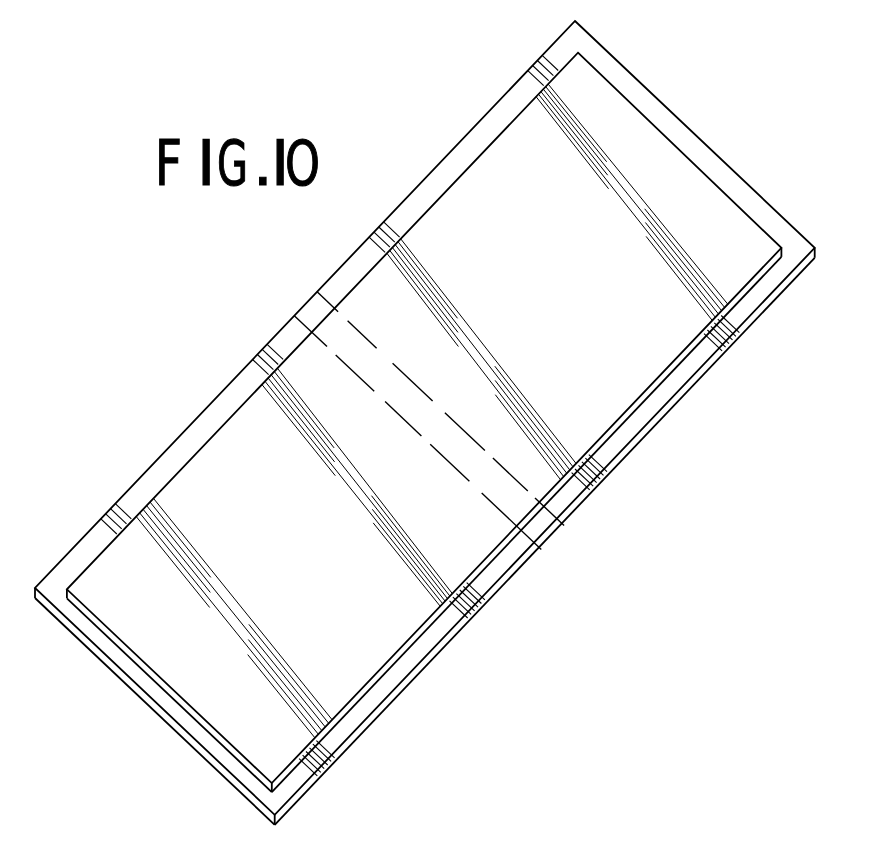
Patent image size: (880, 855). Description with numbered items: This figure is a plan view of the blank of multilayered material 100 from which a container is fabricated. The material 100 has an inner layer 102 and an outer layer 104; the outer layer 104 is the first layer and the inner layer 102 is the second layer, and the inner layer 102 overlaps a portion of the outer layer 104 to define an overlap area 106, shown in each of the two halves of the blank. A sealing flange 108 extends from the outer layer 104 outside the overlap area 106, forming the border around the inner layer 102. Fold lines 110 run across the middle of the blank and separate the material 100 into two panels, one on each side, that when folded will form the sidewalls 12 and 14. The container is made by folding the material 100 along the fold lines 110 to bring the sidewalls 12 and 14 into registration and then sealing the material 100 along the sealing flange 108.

The sidewall 12 is at (445, 131).
The sidewall 14 is at (126, 474).
The multilayered material 100 is at (697, 412).
The inner layer 102 is at (320, 742).
The outer layer 104 is at (309, 791).
The overlap area 106 is at (574, 260).
The sealing flange 108 is at (395, 677).
The fold lines 110 is at (517, 500).